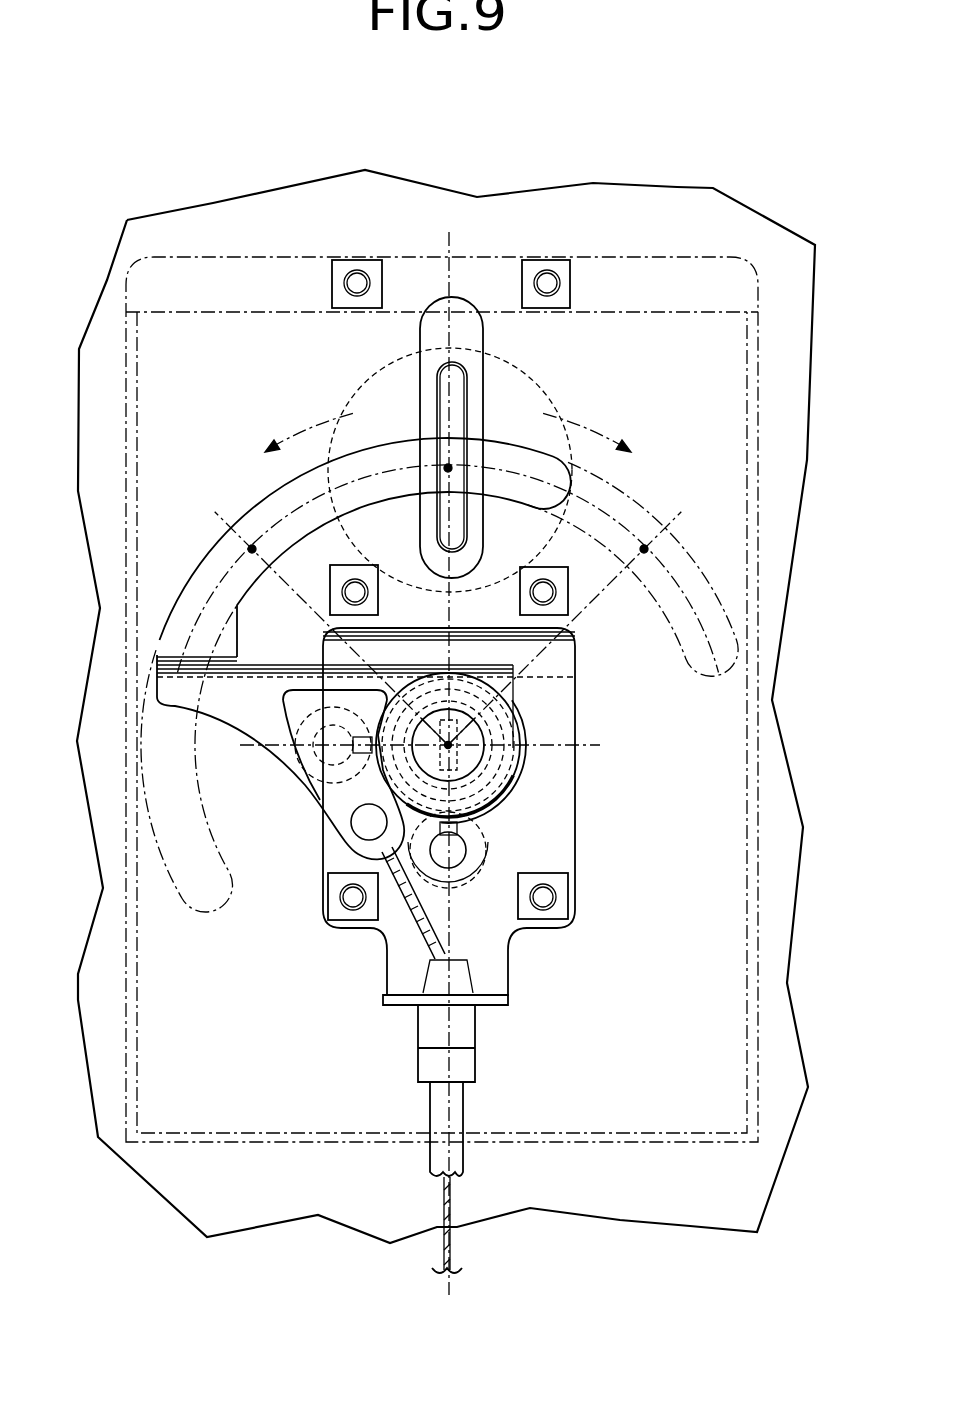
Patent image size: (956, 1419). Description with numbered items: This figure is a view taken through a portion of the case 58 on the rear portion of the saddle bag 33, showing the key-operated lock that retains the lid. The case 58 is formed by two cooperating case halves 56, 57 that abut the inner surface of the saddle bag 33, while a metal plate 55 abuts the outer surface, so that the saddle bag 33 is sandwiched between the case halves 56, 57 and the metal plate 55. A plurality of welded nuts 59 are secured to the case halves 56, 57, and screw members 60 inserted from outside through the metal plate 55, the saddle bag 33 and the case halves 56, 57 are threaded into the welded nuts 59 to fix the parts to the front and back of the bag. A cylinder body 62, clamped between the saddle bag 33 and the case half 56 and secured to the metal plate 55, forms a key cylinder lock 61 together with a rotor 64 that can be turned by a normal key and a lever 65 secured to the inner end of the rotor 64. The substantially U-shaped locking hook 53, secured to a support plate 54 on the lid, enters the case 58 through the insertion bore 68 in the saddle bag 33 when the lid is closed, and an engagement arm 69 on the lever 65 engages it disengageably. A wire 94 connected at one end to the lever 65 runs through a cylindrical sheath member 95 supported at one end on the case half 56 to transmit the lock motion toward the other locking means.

The saddle bag 33 is at (198, 1188).
The locking hook 53 is at (433, 420).
The support plate 54 is at (563, 406).
The metal plate 55 is at (335, 380).
The case half 56 is at (560, 800).
The case half 57 is at (757, 797).
The case 58 is at (303, 1155).
The welded nut 59 is at (333, 297).
The screw member 60 is at (357, 272).
The key cylinder lock 61 is at (512, 814).
The cylinder body 62 is at (520, 723).
The rotor 64 is at (540, 762).
The lever 65 is at (253, 710).
The insertion bore 68 is at (486, 372).
The engagement arm 69 is at (560, 474).
The wire 94 is at (450, 1253).
The sheath member 95 is at (455, 1105).